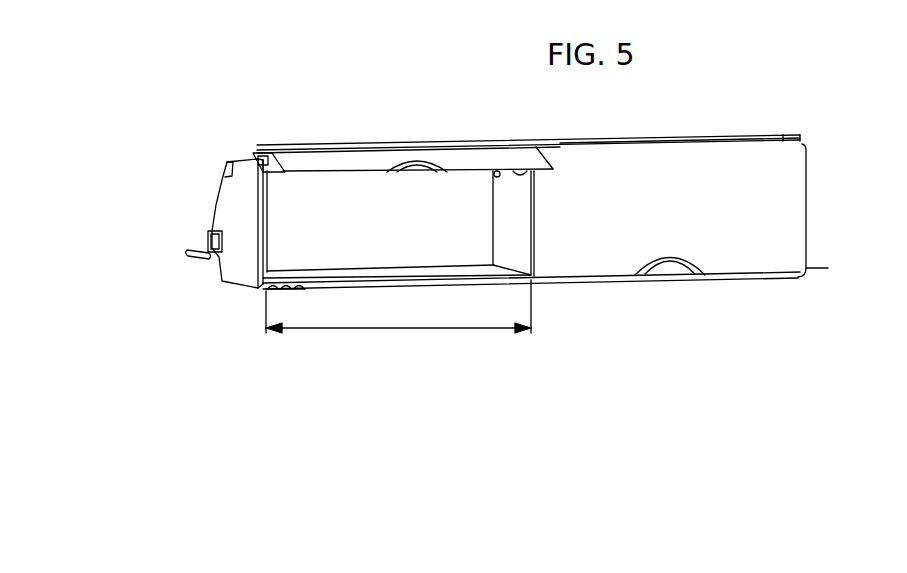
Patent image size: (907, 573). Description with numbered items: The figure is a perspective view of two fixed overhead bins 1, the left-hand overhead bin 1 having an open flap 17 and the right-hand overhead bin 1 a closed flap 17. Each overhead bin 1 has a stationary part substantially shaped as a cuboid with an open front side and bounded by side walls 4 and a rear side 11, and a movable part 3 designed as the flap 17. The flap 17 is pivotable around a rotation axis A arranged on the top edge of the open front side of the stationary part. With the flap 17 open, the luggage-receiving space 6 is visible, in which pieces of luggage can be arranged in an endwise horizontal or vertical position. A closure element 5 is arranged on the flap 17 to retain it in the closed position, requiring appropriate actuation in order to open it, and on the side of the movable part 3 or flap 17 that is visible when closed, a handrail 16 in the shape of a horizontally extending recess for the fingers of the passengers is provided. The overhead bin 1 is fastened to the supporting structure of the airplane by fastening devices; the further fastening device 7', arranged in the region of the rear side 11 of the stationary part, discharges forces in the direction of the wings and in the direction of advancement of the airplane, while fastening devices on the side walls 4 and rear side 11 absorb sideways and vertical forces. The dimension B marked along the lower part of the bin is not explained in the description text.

The overhead bin 1 is at (570, 143).
The movable part 3 is at (350, 158).
The flap 17 is at (757, 160).
The side wall 4 is at (238, 213).
The closure element 5 is at (675, 267).
The luggage-receiving space 6 is at (458, 218).
The fastening device 7' is at (174, 286).
The rear side 11 is at (215, 237).
The handrail 16 is at (800, 268).
The rotation axis A is at (255, 150).
The compartment length B is at (398, 306).